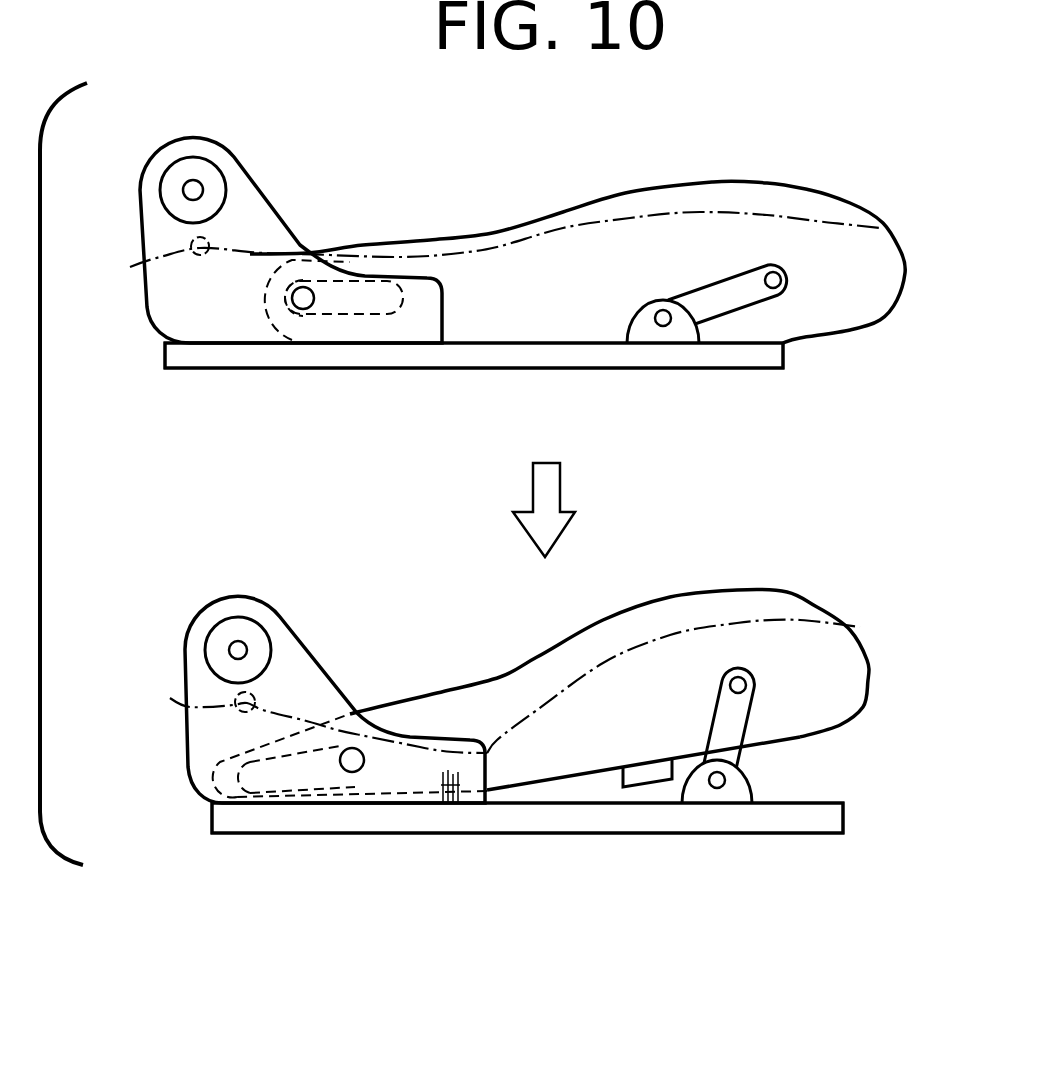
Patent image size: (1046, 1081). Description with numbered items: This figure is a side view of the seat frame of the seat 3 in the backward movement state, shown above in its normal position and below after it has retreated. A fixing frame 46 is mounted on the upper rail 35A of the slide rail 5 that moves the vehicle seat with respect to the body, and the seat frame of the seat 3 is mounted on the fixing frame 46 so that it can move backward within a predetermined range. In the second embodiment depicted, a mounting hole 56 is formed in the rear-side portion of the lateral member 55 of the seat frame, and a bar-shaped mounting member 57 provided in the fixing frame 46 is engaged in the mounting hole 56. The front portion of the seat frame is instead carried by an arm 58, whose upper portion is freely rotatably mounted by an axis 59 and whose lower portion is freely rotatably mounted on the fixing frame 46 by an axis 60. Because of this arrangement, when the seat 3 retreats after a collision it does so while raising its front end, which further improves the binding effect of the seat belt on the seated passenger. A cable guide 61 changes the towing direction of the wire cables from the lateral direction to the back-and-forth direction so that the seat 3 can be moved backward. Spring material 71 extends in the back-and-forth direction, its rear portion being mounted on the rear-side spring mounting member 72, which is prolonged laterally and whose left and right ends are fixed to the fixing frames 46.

The seat 3 is at (571, 443).
The slide rail 5 is at (538, 350).
The upper rail 35A is at (504, 588).
The fixing frame 46 is at (243, 187).
The lateral member 55 is at (537, 243).
The mounting hole 56 is at (362, 275).
The mounting member 57 is at (303, 287).
The arm 58 is at (722, 298).
The axis 59 is at (782, 272).
The axis 60 is at (663, 327).
The cable guide 61 is at (647, 805).
The spring material 71 is at (778, 238).
The rear-side spring mounting member 72 is at (192, 250).